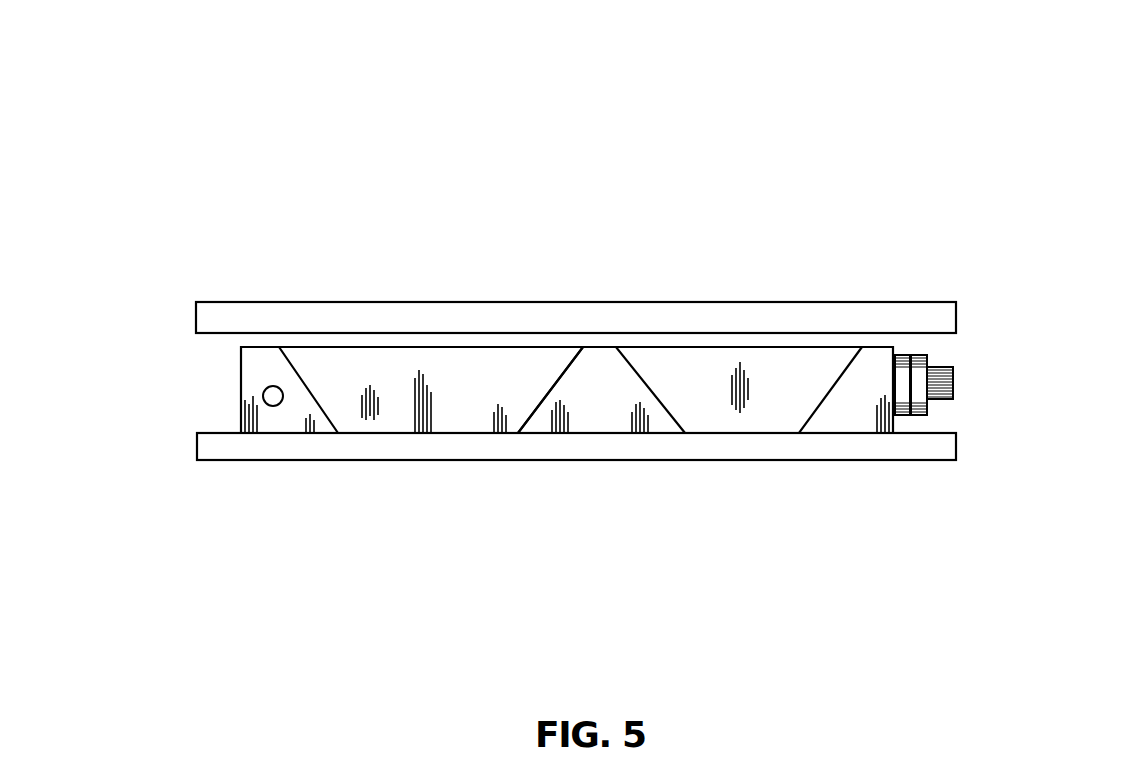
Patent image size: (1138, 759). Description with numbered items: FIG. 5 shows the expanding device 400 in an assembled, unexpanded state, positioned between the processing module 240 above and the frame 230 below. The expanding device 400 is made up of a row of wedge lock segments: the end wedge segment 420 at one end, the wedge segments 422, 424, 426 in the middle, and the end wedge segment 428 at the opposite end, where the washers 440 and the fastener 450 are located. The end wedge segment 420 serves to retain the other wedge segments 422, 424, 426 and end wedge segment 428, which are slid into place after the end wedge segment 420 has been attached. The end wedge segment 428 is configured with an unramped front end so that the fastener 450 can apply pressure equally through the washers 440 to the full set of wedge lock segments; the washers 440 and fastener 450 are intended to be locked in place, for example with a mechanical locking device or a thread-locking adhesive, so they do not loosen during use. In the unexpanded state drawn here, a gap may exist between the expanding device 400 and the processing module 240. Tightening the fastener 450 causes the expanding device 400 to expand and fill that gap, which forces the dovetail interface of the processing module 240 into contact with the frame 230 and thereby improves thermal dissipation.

The expanding device 400 is at (227, 87).
The processing module 240 is at (204, 301).
The frame 230 is at (212, 463).
The end wedge segment 420 is at (240, 392).
The wedge segment 422 is at (470, 355).
The wedge segment 424 is at (604, 355).
The wedge segment 426 is at (788, 355).
The end wedge segment 428 is at (852, 405).
The washers 440 is at (903, 350).
The fastener 450 is at (957, 382).